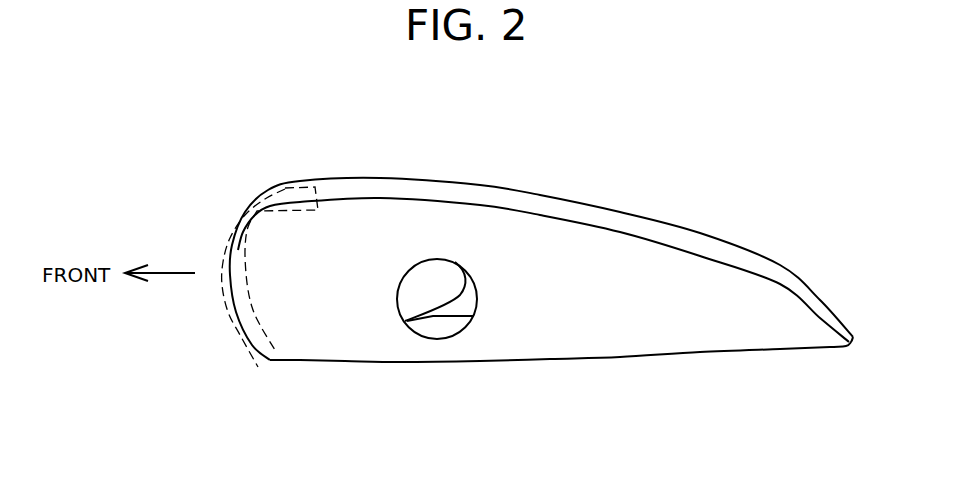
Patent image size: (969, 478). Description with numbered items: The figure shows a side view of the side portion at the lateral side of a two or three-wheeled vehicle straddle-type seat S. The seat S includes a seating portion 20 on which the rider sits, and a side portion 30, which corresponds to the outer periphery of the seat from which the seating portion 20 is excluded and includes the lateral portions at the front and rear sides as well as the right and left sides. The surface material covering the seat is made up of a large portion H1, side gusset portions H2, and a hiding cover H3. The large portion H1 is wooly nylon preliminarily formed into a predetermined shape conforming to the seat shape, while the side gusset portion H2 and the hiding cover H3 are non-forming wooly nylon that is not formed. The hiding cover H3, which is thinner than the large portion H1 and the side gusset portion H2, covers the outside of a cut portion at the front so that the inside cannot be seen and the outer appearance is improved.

The two or three-wheeled vehicle straddle-type seat S is at (150, 113).
The seating portion 20 is at (623, 182).
The side portion 30 is at (805, 250).
The large portion H1 is at (480, 185).
The side gusset portion H2 is at (360, 335).
The hiding cover H3 is at (235, 238).